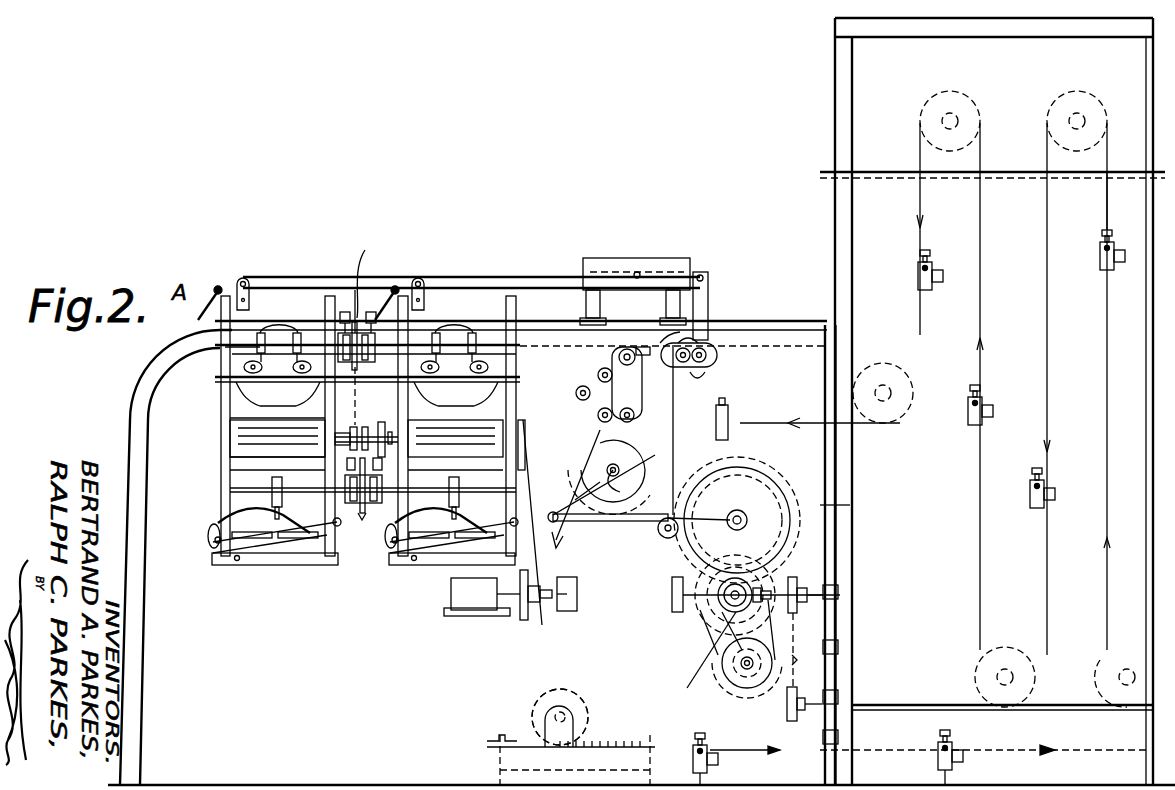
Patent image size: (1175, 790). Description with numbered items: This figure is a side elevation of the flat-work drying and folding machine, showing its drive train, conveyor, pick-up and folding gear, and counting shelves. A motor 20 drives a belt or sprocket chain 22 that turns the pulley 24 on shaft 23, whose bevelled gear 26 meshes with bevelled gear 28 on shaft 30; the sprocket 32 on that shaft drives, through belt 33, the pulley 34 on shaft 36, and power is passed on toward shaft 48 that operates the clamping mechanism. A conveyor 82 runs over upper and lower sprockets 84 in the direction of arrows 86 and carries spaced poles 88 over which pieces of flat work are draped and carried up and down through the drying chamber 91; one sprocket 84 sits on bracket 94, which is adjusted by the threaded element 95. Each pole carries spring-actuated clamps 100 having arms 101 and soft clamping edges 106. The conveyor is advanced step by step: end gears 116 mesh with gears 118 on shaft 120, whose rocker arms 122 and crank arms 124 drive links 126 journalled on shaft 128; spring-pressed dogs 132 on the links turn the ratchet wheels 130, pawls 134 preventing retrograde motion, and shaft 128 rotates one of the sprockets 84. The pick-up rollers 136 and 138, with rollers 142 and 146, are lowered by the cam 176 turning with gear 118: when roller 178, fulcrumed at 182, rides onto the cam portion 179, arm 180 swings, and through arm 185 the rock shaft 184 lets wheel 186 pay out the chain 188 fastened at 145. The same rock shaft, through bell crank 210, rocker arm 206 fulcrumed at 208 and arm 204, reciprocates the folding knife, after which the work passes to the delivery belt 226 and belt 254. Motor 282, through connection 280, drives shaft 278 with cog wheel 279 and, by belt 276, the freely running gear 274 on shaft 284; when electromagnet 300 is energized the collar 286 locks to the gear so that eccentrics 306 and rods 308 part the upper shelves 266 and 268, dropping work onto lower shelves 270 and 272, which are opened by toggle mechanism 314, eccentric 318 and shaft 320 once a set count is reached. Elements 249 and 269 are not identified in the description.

The motor 20 is at (745, 680).
The belt or sprocket chain 22 is at (718, 630).
The shaft 23 is at (720, 612).
The sprocket wheel or pulley 24 is at (835, 630).
The bevelled gear 26 is at (727, 660).
The bevelled gear 28 is at (733, 650).
The shaft 30 is at (808, 595).
The sprocket or pulley 32 is at (800, 580).
The belt or sprocket chain 33 is at (798, 660).
The pulley or sprocket 34 is at (800, 695).
The shaft 36 is at (1002, 692).
The shaft 48 is at (575, 500).
The conveyor 82 is at (540, 660).
The sprockets or pulleys 84 is at (975, 115).
The arrows 86 is at (915, 210).
The poles 88 is at (905, 276).
The drying chamber 91 is at (992, 401).
The bracket 94 is at (575, 732).
The threaded element 95 is at (543, 740).
The clamps 100 is at (930, 255).
The arms of clamps 101 is at (1114, 245).
The clamping edge 106 is at (940, 282).
The end gears 116 is at (712, 590).
The gears 118 is at (778, 478).
The shaft 120 is at (740, 510).
The rocker arms 122 is at (740, 510).
The crank arms 124 is at (581, 489).
The links 126 is at (578, 465).
The shaft 128 is at (598, 416).
The ratchet wheels 130 is at (648, 455).
The spring-pressed dogs 132 is at (630, 481).
The pawls 134 is at (675, 430).
The roller 136 is at (576, 394).
The roller 138 is at (597, 375).
The roller 142 is at (618, 357).
The chain attachment point 145 is at (637, 383).
The roller 146 is at (633, 334).
The cam 176 is at (705, 540).
The roller 178 is at (665, 540).
The convex portion of cam 179 is at (853, 504).
The arm 180 is at (740, 424).
The fulcrum 182 is at (690, 388).
The rock shaft 184 is at (712, 356).
The arm 185 is at (700, 338).
The wheel 186 is at (708, 374).
The chain 188 is at (665, 340).
The arm 204 is at (240, 288).
The rocker arm 206 is at (305, 280).
The fulcrum 208 is at (640, 272).
The bell crank 210 is at (710, 278).
The delivery belt 226 is at (450, 452).
The switch support 249 is at (938, 762).
The belt 254 is at (230, 456).
The upper shelf 266 is at (230, 418).
The upper shelf 268 is at (277, 438).
The hood 269 is at (369, 419).
The lower shelf 270 is at (250, 560).
The lower shelf 272 is at (318, 545).
The gear 274 is at (375, 318).
The belt or sprocket chain 276 is at (358, 420).
The shaft 278 is at (345, 445).
The cog wheel 279 is at (392, 447).
The connection 280 is at (535, 555).
The motor 282 is at (450, 588).
The shaft 284 is at (240, 348).
The collar 286 is at (340, 330).
The electromagnet 300 is at (370, 270).
The eccentrics 306 is at (280, 325).
The rods 308 is at (243, 368).
The toggle mechanism 314 is at (285, 548).
The eccentric 318 is at (274, 482).
The shaft 320 is at (230, 470).